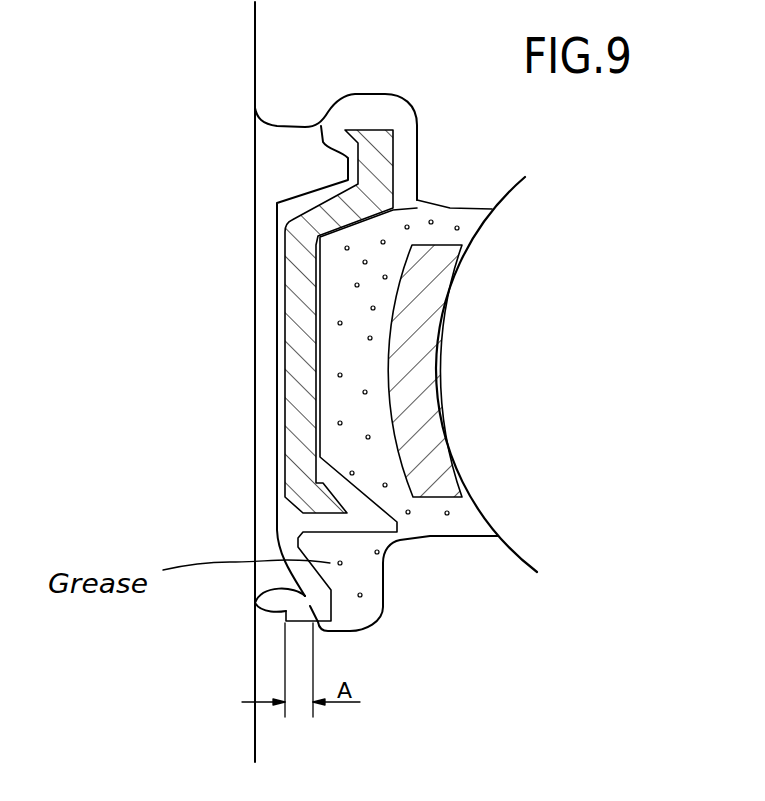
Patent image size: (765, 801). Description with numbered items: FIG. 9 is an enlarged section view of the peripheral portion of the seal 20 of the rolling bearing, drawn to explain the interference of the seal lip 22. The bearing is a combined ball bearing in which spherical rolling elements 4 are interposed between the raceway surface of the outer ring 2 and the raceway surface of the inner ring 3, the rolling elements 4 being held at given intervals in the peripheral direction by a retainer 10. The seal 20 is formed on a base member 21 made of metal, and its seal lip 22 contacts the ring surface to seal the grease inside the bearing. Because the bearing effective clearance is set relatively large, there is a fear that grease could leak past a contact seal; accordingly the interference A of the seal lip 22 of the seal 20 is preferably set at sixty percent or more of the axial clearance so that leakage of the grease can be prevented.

The outer ring 2 is at (305, 70).
The inner ring 3 is at (453, 576).
The rolling elements 4 is at (518, 220).
The retainer 10 is at (423, 358).
The seal 20 is at (283, 210).
The base member 21 is at (297, 355).
The seal lip 22 is at (293, 610).